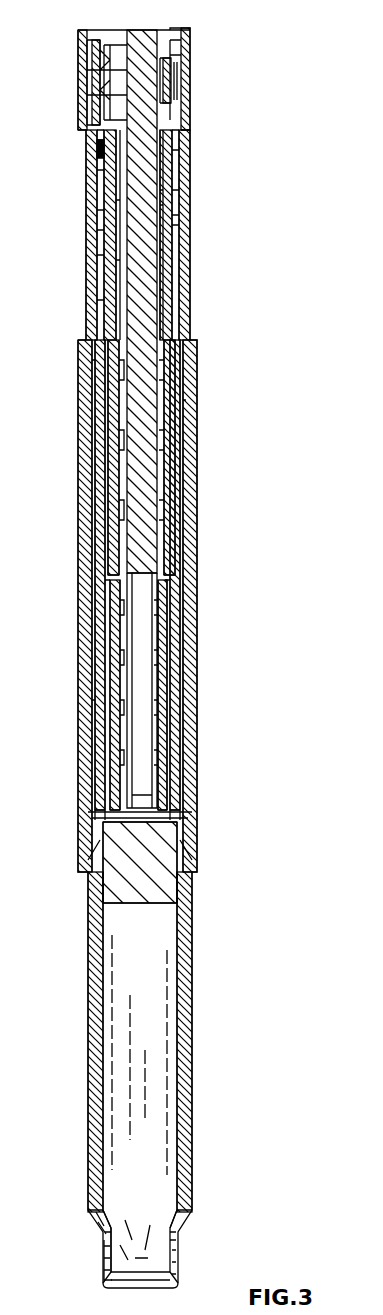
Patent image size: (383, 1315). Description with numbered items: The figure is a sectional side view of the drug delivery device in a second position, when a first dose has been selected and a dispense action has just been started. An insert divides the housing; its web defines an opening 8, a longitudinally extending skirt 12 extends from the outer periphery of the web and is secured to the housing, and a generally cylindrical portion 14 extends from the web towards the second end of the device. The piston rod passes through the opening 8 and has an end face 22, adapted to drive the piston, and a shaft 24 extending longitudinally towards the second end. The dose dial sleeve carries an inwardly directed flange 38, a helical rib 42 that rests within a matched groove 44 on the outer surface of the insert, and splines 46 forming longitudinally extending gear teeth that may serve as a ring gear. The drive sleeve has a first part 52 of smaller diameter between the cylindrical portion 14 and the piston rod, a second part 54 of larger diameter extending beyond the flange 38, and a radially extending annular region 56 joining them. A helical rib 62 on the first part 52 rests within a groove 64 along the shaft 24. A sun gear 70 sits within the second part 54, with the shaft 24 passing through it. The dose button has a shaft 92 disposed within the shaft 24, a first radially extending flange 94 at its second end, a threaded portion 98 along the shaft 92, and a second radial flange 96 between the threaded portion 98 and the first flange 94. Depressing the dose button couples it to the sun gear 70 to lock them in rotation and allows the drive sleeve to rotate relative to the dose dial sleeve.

The opening 8 is at (112, 803).
The skirt 12 is at (84, 822).
The generally cylindrical portion 14 is at (100, 714).
The end face 22 is at (157, 820).
The shaft 24 is at (140, 656).
The inwardly directed flange 38 is at (183, 216).
The helical rib 42 is at (95, 254).
The matched groove 44 is at (100, 664).
The splines 46 is at (190, 72).
The first part of drive sleeve 52 is at (103, 362).
The second part of drive sleeve 54 is at (85, 168).
The radially extending annular region 56 is at (183, 198).
The helical rib 62 is at (122, 530).
The groove 64 is at (180, 698).
The sun gear 70 is at (92, 148).
The shaft 92 is at (142, 455).
The first radially extending flange 94 is at (185, 35).
The second radial flange 96 is at (80, 50).
The threaded portion 98 is at (80, 92).